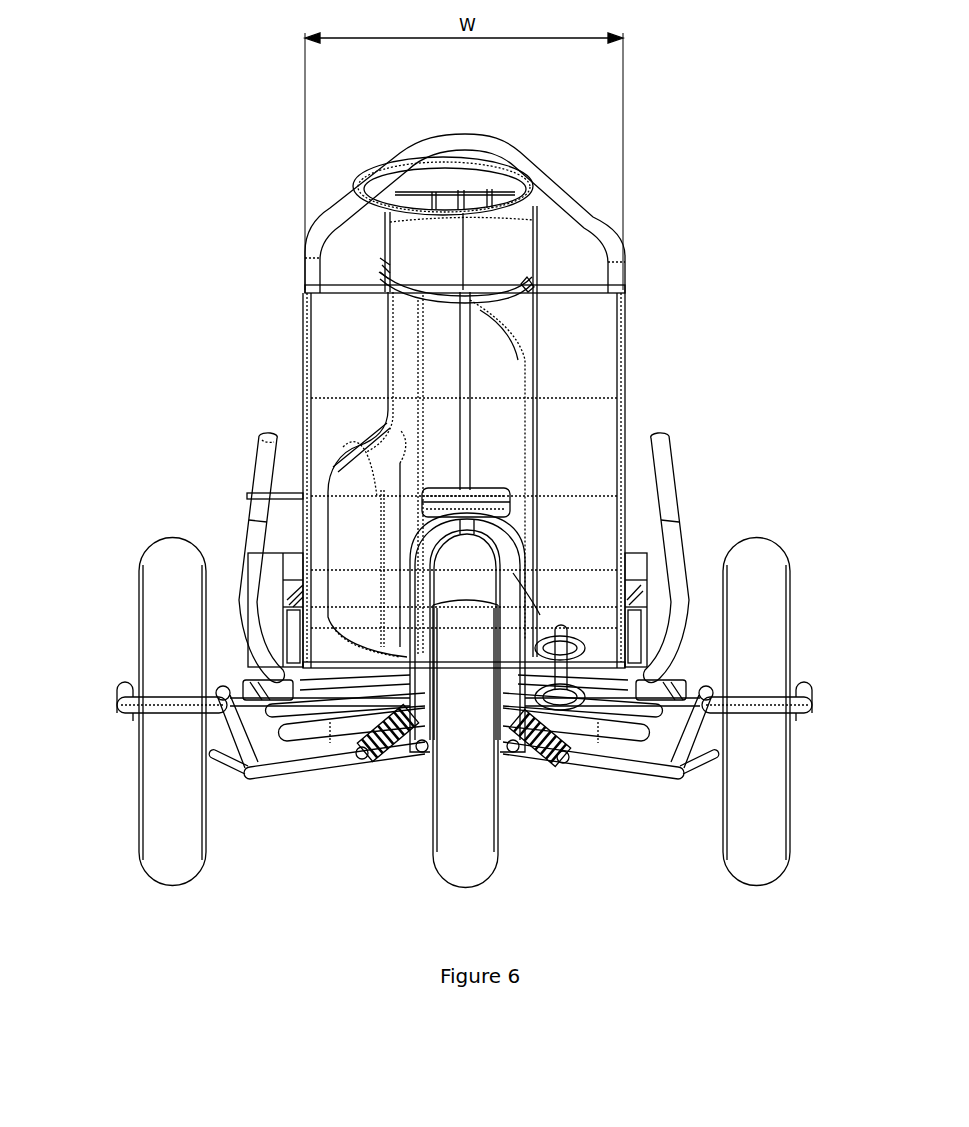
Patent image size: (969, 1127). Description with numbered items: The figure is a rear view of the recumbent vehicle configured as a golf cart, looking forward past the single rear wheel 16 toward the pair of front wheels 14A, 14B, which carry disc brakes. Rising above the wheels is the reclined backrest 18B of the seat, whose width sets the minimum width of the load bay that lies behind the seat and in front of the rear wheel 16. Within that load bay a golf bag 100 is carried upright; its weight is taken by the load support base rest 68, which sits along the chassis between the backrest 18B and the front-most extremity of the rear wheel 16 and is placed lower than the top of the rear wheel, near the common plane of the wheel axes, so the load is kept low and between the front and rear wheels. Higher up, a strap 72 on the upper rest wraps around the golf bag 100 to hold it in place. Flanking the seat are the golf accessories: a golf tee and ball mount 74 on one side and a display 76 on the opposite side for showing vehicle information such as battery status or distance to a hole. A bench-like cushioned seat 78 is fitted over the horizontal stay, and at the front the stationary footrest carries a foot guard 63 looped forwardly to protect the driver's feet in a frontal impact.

The front wheel 14A is at (165, 587).
The front wheel 14B is at (775, 585).
The rear wheel 16 is at (447, 872).
The reclined backrest 18B is at (600, 327).
The foot guard 63 is at (317, 728).
The load support base rest 68 is at (383, 686).
The strap 72 is at (382, 270).
The golf tee and ball mount 74 is at (675, 500).
The display 76 is at (297, 585).
The bench-like cushioned seat 78 is at (490, 492).
The golf bag 100 is at (407, 373).